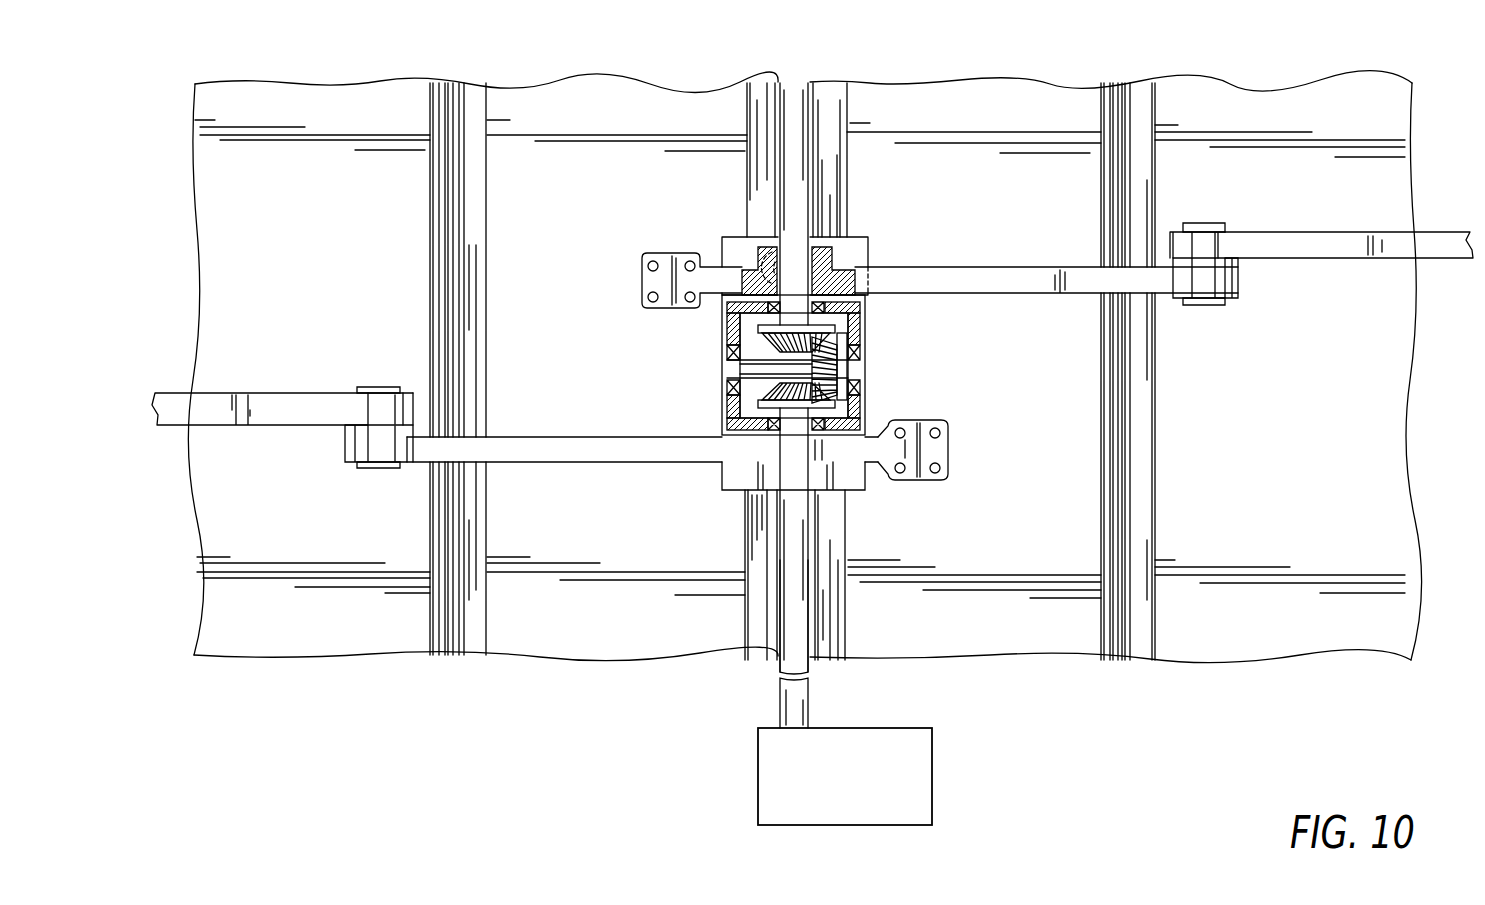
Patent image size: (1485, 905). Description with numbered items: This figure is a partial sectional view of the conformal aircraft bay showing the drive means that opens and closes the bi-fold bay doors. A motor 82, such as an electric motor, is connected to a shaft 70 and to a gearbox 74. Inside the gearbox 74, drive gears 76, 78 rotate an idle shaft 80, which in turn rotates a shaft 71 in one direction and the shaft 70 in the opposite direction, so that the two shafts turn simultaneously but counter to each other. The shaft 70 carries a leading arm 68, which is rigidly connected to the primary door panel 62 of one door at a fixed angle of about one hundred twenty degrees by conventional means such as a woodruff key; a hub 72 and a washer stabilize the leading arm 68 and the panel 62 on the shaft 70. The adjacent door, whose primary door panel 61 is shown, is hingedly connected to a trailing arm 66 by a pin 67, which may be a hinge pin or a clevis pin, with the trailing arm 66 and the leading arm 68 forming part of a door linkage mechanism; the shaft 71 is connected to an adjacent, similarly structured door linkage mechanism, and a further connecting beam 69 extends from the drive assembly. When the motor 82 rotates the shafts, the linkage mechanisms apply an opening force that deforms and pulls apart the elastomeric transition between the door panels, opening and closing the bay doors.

The primary door panel 61 is at (642, 272).
The primary door panel 62 is at (940, 452).
The trailing arm 66 is at (260, 400).
The pin 67 is at (385, 388).
The leading arm 68 is at (550, 437).
The connecting beam 69 is at (967, 268).
The shaft 70 is at (787, 618).
The shaft 71 is at (793, 100).
The hub 72 is at (758, 478).
The gearbox 74 is at (722, 326).
The drive gear 76 is at (835, 330).
The drive gear 78 is at (855, 405).
The idle shaft 80 is at (838, 372).
The motor 82 is at (933, 780).